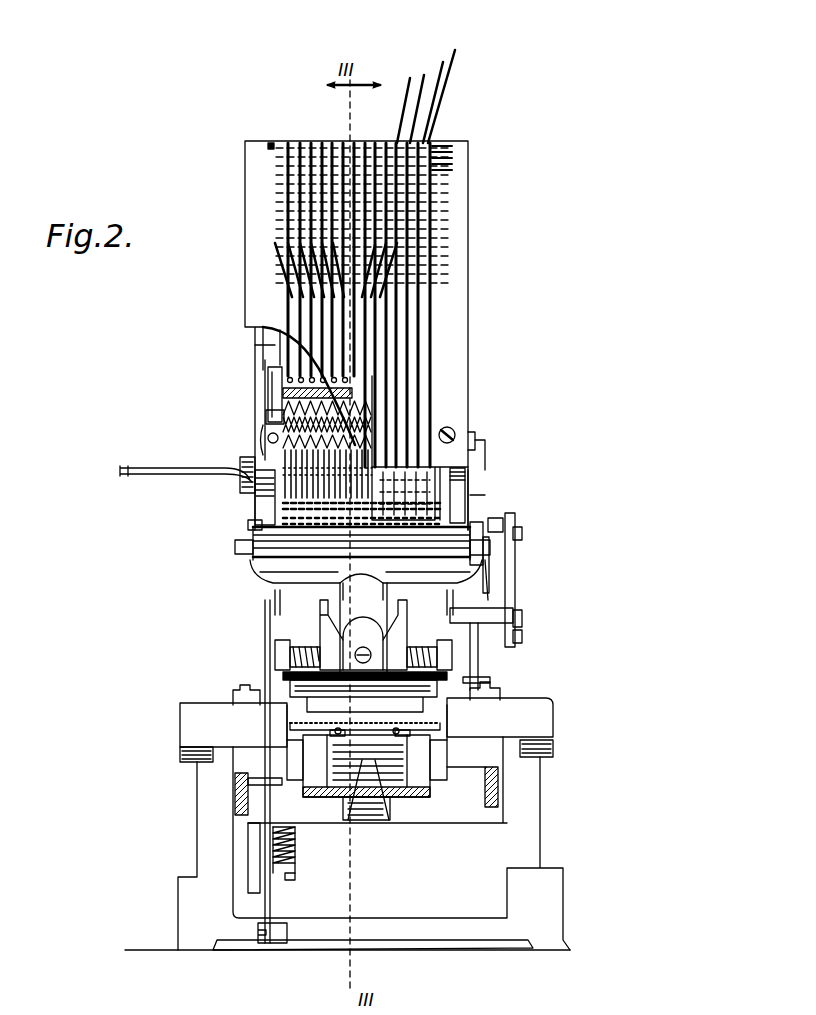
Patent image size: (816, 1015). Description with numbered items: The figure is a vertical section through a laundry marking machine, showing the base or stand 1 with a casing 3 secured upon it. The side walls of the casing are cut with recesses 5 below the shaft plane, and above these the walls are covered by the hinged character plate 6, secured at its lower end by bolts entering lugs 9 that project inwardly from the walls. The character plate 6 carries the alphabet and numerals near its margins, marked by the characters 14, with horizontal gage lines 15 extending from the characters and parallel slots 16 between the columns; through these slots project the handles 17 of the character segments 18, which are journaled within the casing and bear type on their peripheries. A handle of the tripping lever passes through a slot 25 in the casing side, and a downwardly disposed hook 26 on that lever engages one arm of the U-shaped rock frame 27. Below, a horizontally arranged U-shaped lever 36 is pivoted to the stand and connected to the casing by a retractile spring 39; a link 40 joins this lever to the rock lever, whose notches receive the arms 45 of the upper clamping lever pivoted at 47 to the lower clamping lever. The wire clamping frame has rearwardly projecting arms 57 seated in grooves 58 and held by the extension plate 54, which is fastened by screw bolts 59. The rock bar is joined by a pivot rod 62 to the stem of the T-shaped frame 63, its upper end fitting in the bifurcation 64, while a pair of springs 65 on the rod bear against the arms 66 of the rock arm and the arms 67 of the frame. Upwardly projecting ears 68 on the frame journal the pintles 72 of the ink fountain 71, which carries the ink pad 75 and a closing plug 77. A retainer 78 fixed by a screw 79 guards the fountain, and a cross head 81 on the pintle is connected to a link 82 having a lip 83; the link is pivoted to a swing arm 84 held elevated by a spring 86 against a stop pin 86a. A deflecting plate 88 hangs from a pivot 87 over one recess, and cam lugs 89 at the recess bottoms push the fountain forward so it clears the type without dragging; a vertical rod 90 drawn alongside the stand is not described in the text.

The base or stand 1 is at (190, 918).
The casing 3 is at (250, 335).
The recesses 5 is at (255, 500).
The character plate 6 is at (245, 185).
The lugs 9 is at (268, 438).
The letter column 14 is at (268, 145).
The gage lines 15 is at (448, 226).
The slots 16 is at (322, 145).
The handles 17 is at (500, 285).
The character segments 18 is at (257, 344).
The slot 25 is at (120, 472).
The hook 26 is at (268, 370).
The rock frame 27 is at (268, 412).
The U-shaped lever 36 is at (237, 795).
The retractile spring 39 is at (272, 845).
The link 40 is at (365, 805).
The arms 45 is at (340, 800).
The pivot 47 is at (385, 805).
The extension plate 54 is at (180, 722).
The arms 57 is at (300, 728).
The grooves 58 is at (445, 728).
The screw bolts 59 is at (190, 718).
The pivot rod 62 is at (298, 660).
The T-shaped frame 63 is at (366, 617).
The bifurcation 64 is at (355, 620).
The springs 65 is at (280, 645).
The arms 66 is at (300, 688).
The arms 67 is at (275, 595).
The ears 68 is at (250, 523).
The ink fountain 71 is at (260, 555).
The pintles 72 is at (236, 546).
The ink pad 75 is at (470, 478).
The closing plug 77 is at (258, 508).
The retainer 78 is at (515, 568).
The screw 79 is at (520, 558).
The cross head 81 is at (520, 548).
The link 82 is at (520, 578).
The lip 83 is at (515, 523).
The swing arm 84 is at (522, 640).
The spring 86 is at (522, 652).
The stop pin 86a is at (515, 612).
The pivot 87 is at (478, 445).
The deflecting plate 88 is at (478, 492).
The cam lugs 89 is at (262, 948).
The rod 90 is at (262, 615).